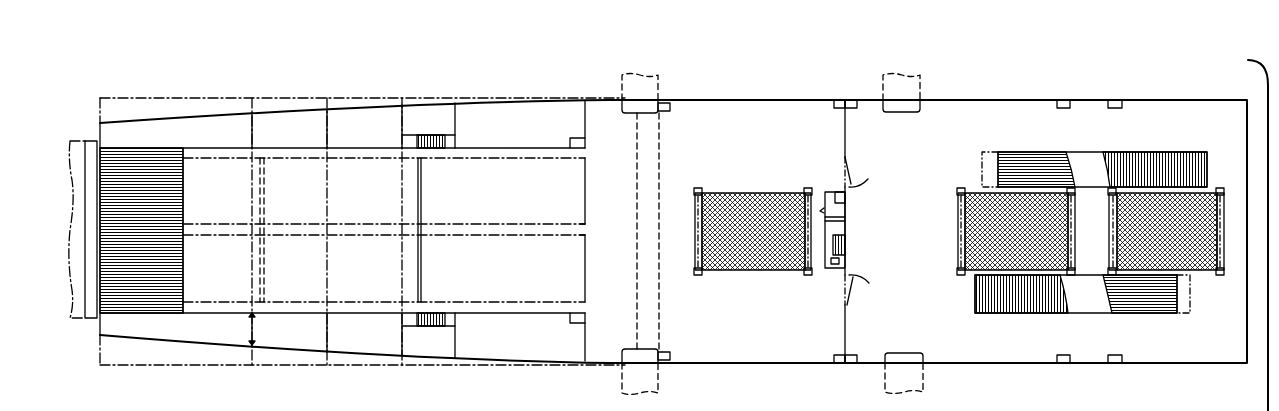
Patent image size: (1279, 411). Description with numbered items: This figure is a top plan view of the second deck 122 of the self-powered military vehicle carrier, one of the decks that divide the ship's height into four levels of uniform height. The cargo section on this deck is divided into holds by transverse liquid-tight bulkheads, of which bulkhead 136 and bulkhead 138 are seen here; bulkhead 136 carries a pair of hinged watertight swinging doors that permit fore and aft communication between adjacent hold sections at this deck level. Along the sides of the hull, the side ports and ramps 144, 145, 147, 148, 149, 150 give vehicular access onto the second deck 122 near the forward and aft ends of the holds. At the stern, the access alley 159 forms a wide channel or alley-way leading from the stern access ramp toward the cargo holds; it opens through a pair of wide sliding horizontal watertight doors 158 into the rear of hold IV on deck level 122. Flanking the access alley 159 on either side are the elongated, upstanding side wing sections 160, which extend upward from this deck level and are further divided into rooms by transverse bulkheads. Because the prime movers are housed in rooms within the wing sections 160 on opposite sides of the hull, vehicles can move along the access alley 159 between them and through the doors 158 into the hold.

The second deck 122 is at (919, 240).
The transverse liquid-tight bulkhead 136 is at (843, 327).
The transverse liquid-tight bulkhead 138 is at (580, 337).
The side port and ramp 144 is at (645, 381).
The side port and ramp 145 is at (917, 373).
The side port and ramp 147 is at (566, 256).
The side port and ramp 148 is at (319, 260).
The side port and ramp 149 is at (898, 74).
The side port and ramp 150 is at (641, 74).
The sliding horizontal water-tight doors 158 is at (587, 209).
The access alley 159 is at (372, 216).
The side wing sections 160 is at (155, 152).